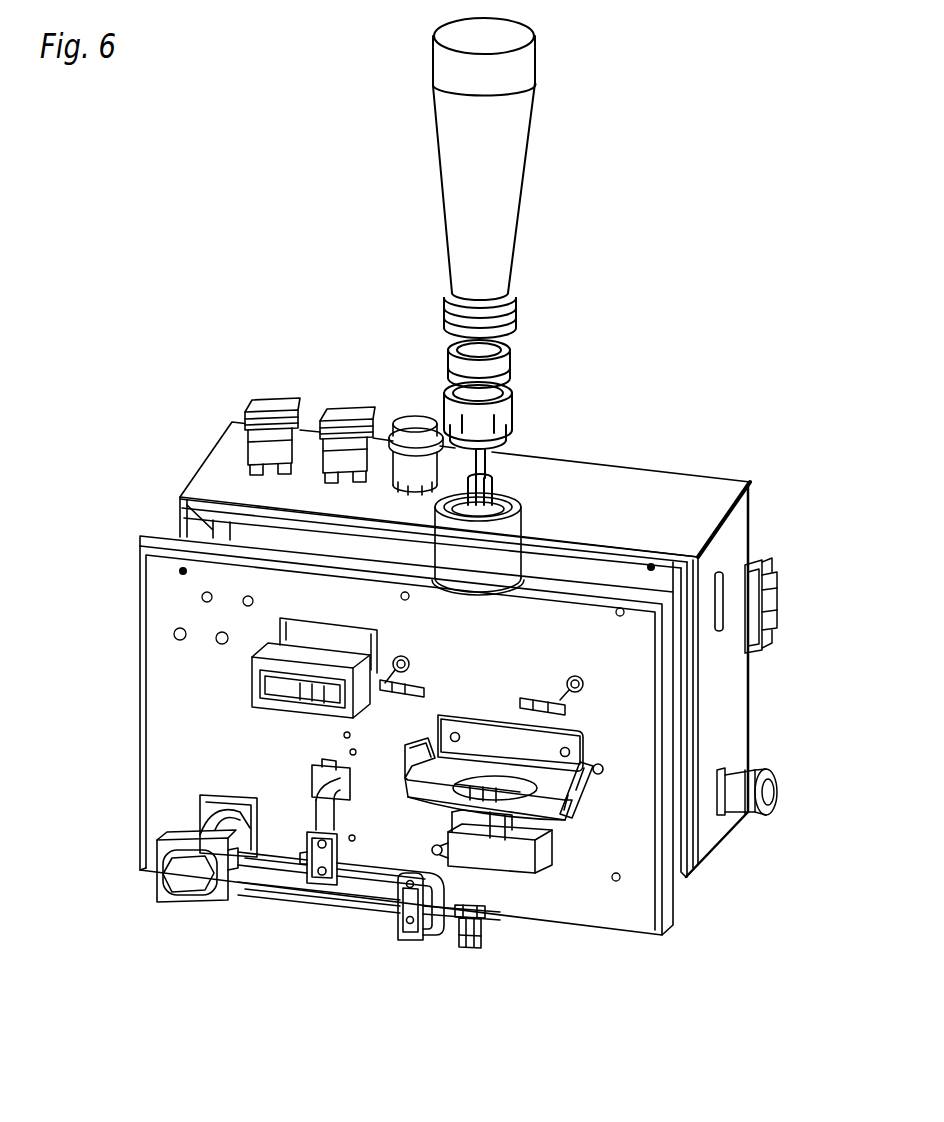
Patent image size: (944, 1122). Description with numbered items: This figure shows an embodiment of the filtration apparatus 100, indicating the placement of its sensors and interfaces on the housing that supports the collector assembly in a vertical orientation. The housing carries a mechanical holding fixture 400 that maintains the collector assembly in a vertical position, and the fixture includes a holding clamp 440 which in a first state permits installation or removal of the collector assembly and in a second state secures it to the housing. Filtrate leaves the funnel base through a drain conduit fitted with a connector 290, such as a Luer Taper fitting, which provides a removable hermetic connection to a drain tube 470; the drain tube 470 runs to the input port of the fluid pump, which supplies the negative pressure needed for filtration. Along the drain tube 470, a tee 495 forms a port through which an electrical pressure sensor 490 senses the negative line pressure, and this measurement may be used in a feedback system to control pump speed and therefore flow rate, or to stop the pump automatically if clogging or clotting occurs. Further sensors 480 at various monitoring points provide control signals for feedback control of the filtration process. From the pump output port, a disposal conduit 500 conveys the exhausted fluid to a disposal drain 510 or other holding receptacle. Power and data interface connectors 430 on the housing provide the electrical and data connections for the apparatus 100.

The apparatus 100 is at (283, 373).
The sensors 480 is at (425, 660).
The power and data interface connectors 430 is at (780, 633).
The electrical pressure sensor 490 is at (300, 775).
The tee 495 is at (300, 850).
The drain tube 470 is at (285, 868).
The disposal conduit 500 is at (297, 915).
The disposal drain 510 is at (413, 943).
The connector 290 is at (480, 960).
The mechanical holding fixture 400 is at (540, 875).
The holding clamp 440 is at (593, 812).